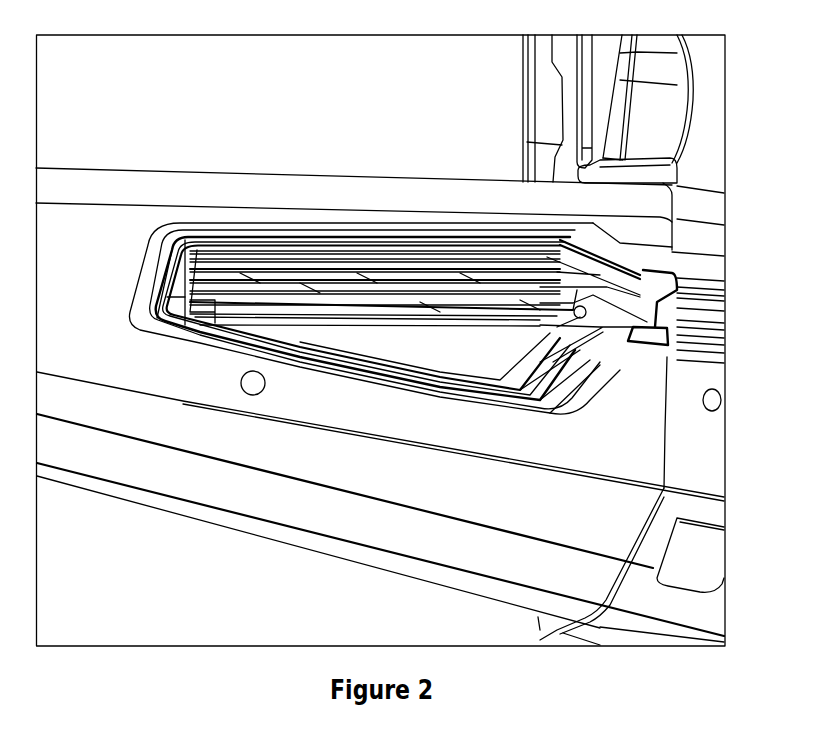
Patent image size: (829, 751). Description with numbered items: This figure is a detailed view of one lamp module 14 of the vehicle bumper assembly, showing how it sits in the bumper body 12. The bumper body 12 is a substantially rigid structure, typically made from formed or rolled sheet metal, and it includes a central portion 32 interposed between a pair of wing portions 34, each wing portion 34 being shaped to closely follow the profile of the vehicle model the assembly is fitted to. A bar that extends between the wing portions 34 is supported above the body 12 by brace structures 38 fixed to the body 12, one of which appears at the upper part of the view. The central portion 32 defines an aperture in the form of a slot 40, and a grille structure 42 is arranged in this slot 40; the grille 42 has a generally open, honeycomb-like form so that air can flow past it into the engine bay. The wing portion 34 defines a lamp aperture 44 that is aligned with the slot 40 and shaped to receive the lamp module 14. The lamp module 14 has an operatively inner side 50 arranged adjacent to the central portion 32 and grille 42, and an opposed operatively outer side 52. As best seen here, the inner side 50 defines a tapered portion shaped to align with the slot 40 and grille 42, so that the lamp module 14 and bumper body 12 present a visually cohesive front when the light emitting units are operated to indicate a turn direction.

The bumper body 12 is at (428, 182).
The lamp module 14 is at (277, 247).
The central portion 32 is at (697, 475).
The wing portion 34 is at (120, 187).
The brace structure 38 is at (533, 97).
The slot 40 is at (693, 275).
The grille structure 42 is at (707, 310).
The lamp aperture 44 is at (367, 230).
The inner side 50 is at (650, 348).
The outer side 52 is at (163, 299).